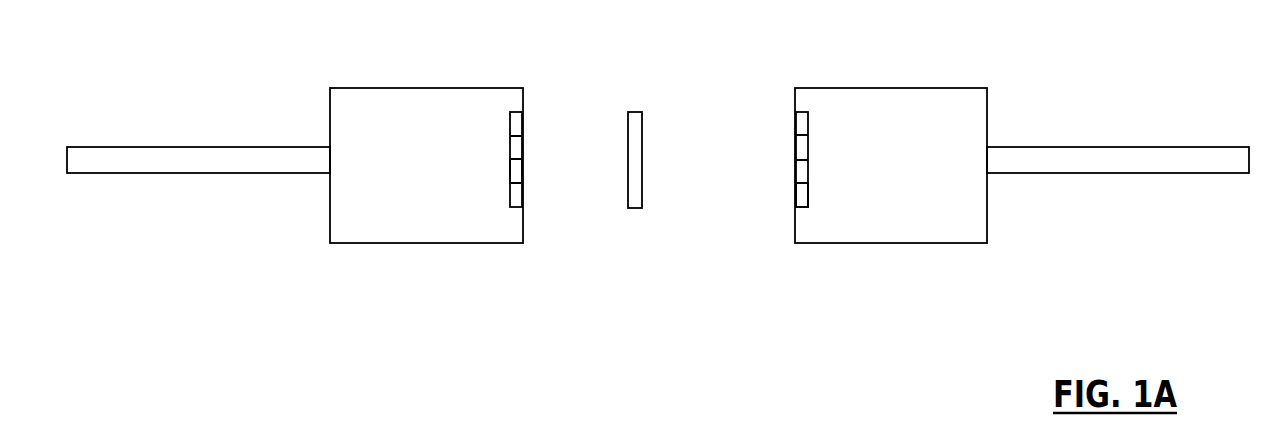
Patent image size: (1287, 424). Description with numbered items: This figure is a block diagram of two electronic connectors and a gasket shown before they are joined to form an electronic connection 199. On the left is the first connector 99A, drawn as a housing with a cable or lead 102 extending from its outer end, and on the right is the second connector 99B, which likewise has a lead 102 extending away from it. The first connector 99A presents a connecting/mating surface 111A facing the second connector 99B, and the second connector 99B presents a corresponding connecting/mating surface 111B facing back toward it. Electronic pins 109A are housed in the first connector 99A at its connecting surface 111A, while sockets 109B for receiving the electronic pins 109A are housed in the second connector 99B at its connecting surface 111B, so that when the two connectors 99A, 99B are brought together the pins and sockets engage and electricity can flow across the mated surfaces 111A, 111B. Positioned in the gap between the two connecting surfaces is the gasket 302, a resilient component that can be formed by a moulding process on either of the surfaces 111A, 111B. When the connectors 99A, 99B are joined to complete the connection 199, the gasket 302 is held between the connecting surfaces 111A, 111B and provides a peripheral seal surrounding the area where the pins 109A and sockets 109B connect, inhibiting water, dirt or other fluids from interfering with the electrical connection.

The shaft / rod 102 is at (140, 164).
The first connector 99A is at (421, 199).
The second connector 99B is at (897, 221).
The connecting/mating surface 111A is at (526, 139).
The electronic pins 109A is at (528, 184).
The connecting/mating surface 111B is at (792, 199).
The sockets 109B is at (792, 135).
The gasket 302 is at (646, 109).
The connection 199 is at (578, 414).